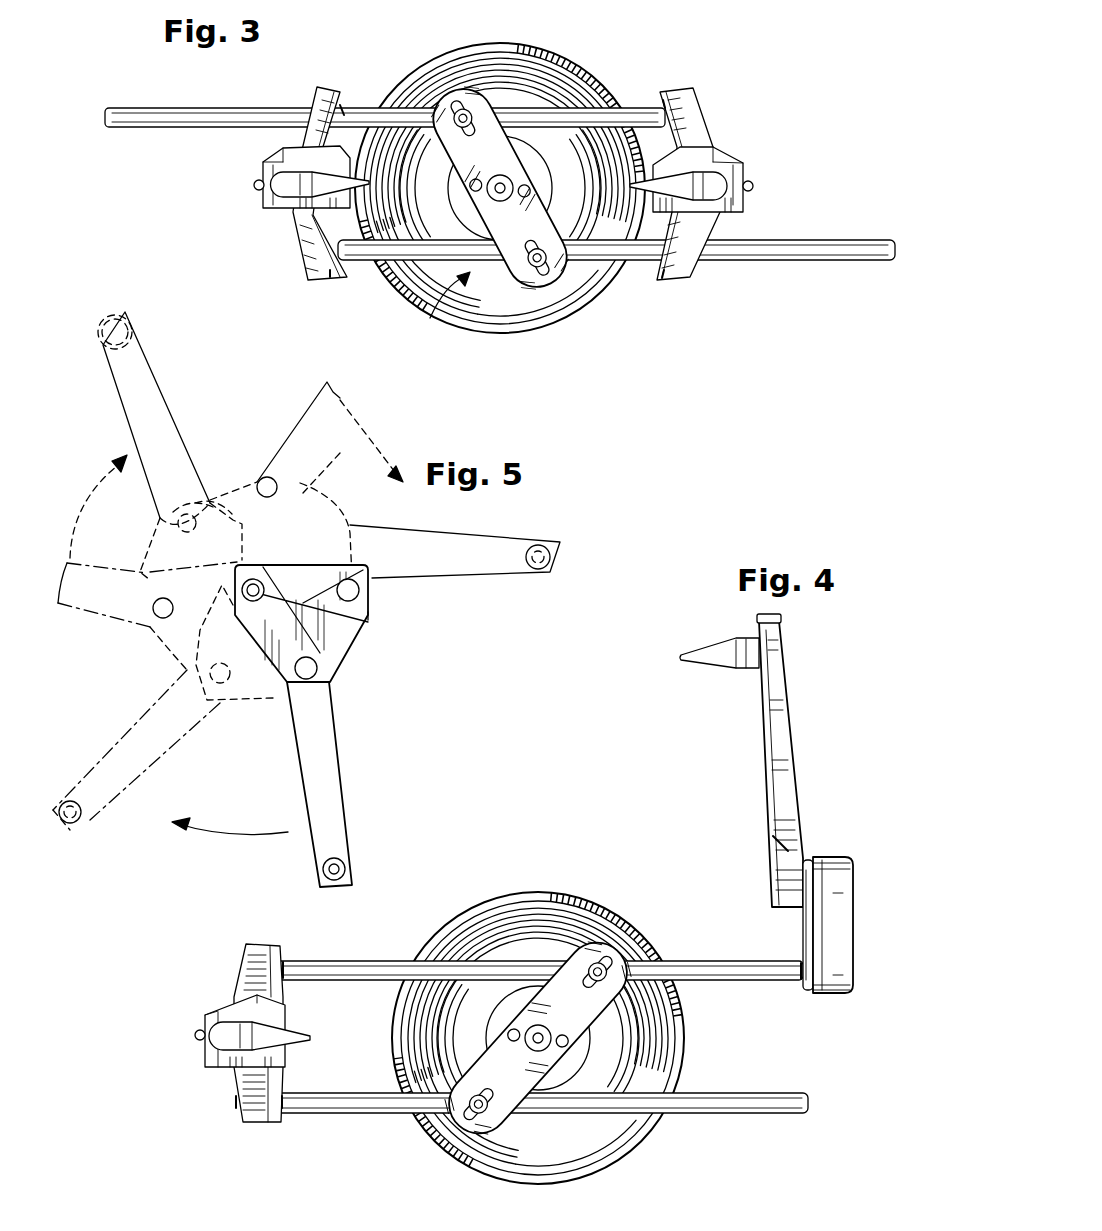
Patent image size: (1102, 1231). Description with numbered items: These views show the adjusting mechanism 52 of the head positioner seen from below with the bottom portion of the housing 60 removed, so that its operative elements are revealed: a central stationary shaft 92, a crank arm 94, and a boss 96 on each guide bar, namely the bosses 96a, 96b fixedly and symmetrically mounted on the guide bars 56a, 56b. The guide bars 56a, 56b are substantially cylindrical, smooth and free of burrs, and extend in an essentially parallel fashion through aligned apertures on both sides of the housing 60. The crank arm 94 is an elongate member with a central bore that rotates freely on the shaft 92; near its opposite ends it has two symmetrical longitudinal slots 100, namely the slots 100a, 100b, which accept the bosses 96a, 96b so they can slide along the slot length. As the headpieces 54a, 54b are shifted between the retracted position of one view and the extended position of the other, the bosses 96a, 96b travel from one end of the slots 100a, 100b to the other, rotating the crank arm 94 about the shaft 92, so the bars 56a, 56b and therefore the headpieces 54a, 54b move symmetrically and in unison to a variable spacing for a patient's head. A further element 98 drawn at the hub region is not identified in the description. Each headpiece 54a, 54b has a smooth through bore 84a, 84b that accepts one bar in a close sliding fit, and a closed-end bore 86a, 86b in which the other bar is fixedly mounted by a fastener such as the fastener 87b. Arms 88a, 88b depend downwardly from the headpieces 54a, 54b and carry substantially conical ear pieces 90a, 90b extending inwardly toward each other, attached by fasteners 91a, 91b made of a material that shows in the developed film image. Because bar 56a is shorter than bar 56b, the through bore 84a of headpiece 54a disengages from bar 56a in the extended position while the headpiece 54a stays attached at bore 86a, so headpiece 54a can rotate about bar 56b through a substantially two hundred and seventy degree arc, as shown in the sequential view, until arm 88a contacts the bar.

In FIG. 3, the adjusting mechanism 52 is at (443, 313).
In FIG. 4, the adjusting mechanism 52 is at (470, 962).
In FIG. 3, the headpiece 54a is at (688, 278).
In FIG. 5, the headpiece 54a is at (340, 630).
In FIG. 4, the headpiece 54a is at (843, 862).
In FIG. 3, the headpiece 54b is at (308, 252).
In FIG. 4, the headpiece 54b is at (253, 946).
In FIG. 3, the guide bar 56a is at (822, 242).
In FIG. 5, the guide bar 56a is at (366, 560).
In FIG. 4, the guide bar 56a is at (745, 1112).
In FIG. 3, the guide bar 56b is at (165, 108).
In FIG. 4, the guide bar 56b is at (713, 961).
In FIG. 3, the housing 60 is at (500, 204).
In FIG. 4, the housing 60 is at (492, 900).
In FIG. 3, the through bore 84a is at (662, 290).
In FIG. 5, the through bore 84a is at (262, 478).
In FIG. 4, the through bore 84a is at (798, 855).
In FIG. 3, the through bore 84b is at (346, 108).
In FIG. 4, the through bore 84b is at (285, 963).
In FIG. 3, the closed-end bore 86a is at (661, 98).
In FIG. 4, the closed-end bore 86a is at (798, 958).
In FIG. 3, the closed-end bore 86b is at (342, 276).
In FIG. 4, the closed-end bore 86b is at (290, 1125).
In FIG. 5, the fastener 87b is at (372, 622).
In FIG. 4, the fastener 87b is at (234, 1103).
In FIG. 3, the arm 88a is at (735, 160).
In FIG. 5, the arm 88a is at (328, 742).
In FIG. 4, the arm 88a is at (760, 720).
In FIG. 3, the arm 88b is at (285, 212).
In FIG. 4, the arm 88b is at (208, 1012).
In FIG. 3, the ear piece 90a is at (698, 148).
In FIG. 4, the ear piece 90a is at (718, 652).
In FIG. 3, the ear piece 90b is at (370, 170).
In FIG. 4, the ear piece 90b is at (310, 1036).
In FIG. 3, the fastener 91a is at (753, 186).
In FIG. 5, the fastener 91a is at (340, 862).
In FIG. 4, the fastener 91a is at (781, 660).
In FIG. 3, the fastener 91b is at (258, 187).
In FIG. 4, the fastener 91b is at (200, 1042).
In FIG. 3, the central stationary shaft 92 is at (494, 174).
In FIG. 4, the central stationary shaft 92 is at (548, 1044).
In FIG. 3, the crank arm 94 is at (530, 266).
In FIG. 4, the crank arm 94 is at (625, 988).
In FIG. 3, the boss 96 is at (462, 112).
In FIG. 4, the boss 96a is at (474, 1106).
In FIG. 4, the boss 96b is at (600, 960).
In FIG. 3, the hub boss circle 98 is at (455, 193).
In FIG. 4, the hub boss circle 98 is at (488, 1030).
In FIG. 3, the slot 100 is at (452, 100).
In FIG. 4, the slot 100a is at (477, 1116).
In FIG. 4, the slot 100b is at (604, 982).